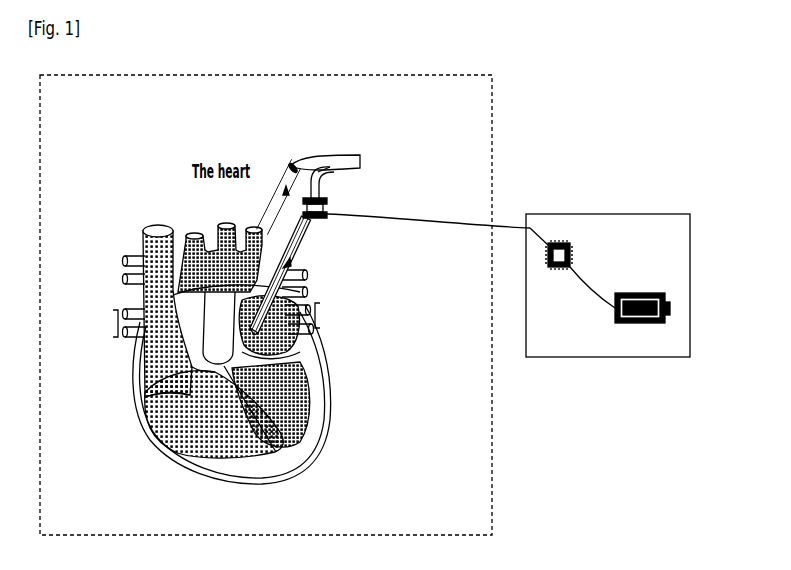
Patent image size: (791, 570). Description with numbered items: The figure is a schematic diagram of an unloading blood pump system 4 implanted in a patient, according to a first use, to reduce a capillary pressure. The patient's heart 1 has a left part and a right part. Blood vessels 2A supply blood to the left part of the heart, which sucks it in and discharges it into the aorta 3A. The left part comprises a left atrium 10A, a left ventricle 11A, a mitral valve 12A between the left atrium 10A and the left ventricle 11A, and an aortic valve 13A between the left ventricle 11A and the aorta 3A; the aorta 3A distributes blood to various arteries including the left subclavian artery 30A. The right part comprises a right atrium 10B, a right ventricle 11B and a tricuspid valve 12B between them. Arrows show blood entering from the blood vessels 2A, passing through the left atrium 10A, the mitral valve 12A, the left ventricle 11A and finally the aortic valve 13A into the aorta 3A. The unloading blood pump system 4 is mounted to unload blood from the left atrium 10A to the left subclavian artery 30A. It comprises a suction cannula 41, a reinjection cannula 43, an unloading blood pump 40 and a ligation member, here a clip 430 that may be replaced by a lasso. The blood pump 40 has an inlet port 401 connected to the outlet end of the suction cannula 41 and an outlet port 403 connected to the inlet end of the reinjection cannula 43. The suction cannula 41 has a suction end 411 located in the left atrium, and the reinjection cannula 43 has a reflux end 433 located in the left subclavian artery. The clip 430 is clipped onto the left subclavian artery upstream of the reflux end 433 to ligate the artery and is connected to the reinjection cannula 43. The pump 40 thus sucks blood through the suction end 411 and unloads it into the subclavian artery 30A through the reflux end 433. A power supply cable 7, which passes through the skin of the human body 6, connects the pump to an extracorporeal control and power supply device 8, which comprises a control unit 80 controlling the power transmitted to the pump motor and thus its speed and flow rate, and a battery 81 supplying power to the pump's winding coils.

The heart 1 is at (303, 460).
The blood vessels 2A is at (324, 316).
The aorta 3A is at (248, 246).
The unloading blood pump system 4 is at (370, 247).
The human body 6 is at (469, 136).
The power supply cable 7 is at (498, 230).
The control and power supply device 8 is at (660, 218).
The left atrium 10A is at (240, 349).
The right atrium 10B is at (152, 352).
The left ventricle 11A is at (290, 410).
The right ventricle 11B is at (210, 447).
The mitral valve 12A is at (280, 362).
The tricuspid valve 12B is at (184, 397).
The aortic valve 13A is at (235, 365).
The left subclavian artery 30A is at (325, 154).
The unloading blood pump 40 is at (347, 208).
The suction cannula 41 is at (313, 246).
The reinjection cannula 43 is at (329, 178).
The control unit 80 is at (566, 243).
The battery 81 is at (640, 293).
The inlet port 401 is at (319, 221).
The outlet port 403 is at (314, 188).
The suction end 411 is at (248, 328).
The clip 430 is at (291, 163).
The reflux end 433 is at (335, 160).